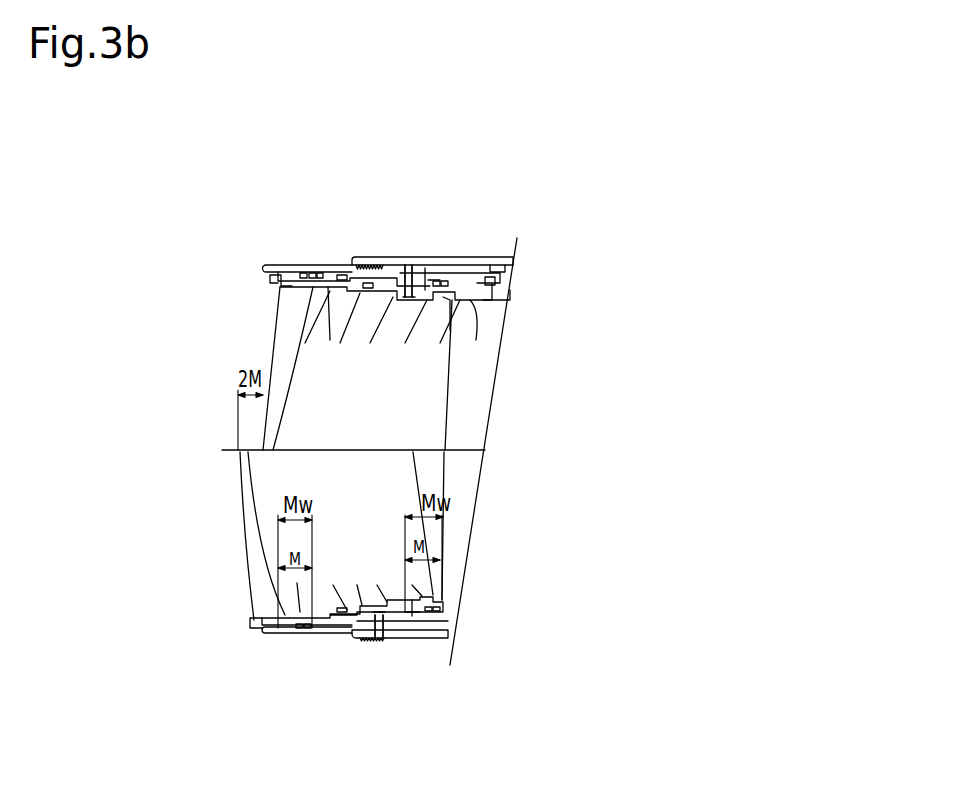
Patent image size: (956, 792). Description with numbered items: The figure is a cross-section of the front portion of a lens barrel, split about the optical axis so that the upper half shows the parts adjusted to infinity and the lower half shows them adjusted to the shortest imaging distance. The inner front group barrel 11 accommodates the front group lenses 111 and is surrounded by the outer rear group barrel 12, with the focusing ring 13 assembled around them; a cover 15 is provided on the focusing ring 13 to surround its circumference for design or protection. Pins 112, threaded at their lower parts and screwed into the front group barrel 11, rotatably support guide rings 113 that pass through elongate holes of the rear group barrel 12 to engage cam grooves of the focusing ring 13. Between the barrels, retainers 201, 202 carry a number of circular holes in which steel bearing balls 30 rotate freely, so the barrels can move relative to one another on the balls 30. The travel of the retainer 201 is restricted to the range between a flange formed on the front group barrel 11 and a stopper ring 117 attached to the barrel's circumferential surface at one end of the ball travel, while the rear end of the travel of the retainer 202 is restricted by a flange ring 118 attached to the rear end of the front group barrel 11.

The front group barrel 11 is at (268, 283).
The rear group barrel 12 is at (272, 263).
The focusing ring 13 is at (463, 263).
The cover 15 is at (500, 255).
The bearing balls 30 is at (308, 272).
The front group lenses 111 is at (440, 393).
The pins 112 is at (407, 267).
The guide rings 113 is at (407, 267).
The stopper ring 117 is at (341, 268).
The flange ring 118 is at (483, 297).
The retainer 201 is at (316, 272).
The retainer 202 is at (432, 275).